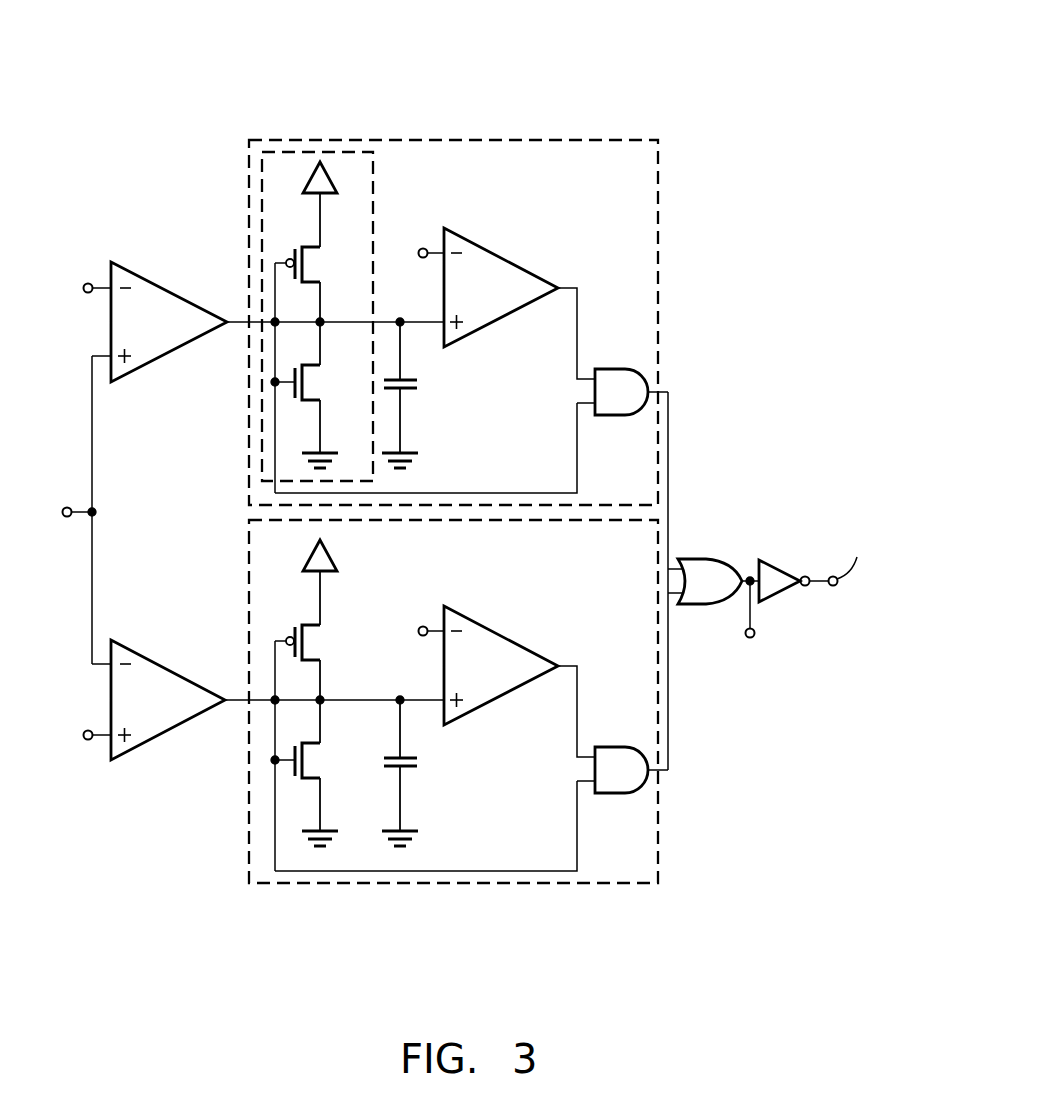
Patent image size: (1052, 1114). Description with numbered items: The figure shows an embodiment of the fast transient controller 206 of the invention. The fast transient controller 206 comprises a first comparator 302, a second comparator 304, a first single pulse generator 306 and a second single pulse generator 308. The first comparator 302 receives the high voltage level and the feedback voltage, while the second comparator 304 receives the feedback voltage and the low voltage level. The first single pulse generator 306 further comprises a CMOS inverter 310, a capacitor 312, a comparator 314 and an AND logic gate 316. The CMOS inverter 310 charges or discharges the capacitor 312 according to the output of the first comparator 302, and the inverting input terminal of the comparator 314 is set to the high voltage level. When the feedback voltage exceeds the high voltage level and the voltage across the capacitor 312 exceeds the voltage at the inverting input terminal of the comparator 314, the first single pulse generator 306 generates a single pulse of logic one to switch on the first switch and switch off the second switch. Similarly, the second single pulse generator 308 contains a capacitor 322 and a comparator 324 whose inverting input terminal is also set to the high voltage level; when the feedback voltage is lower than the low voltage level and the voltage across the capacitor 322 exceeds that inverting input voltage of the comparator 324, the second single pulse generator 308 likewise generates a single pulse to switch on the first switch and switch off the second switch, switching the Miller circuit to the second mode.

The fast transient controller 206 is at (121, 45).
The first comparator 302 is at (172, 290).
The second comparator 304 is at (170, 666).
The first single pulse generator 306 is at (611, 140).
The second single pulse generator 308 is at (615, 885).
The CMOS inverter 310 is at (378, 179).
The capacitor 312 is at (412, 392).
The comparator 314 is at (500, 255).
The AND logic gate 316 is at (616, 368).
The capacitor 322 is at (412, 770).
The comparator 324 is at (500, 633).